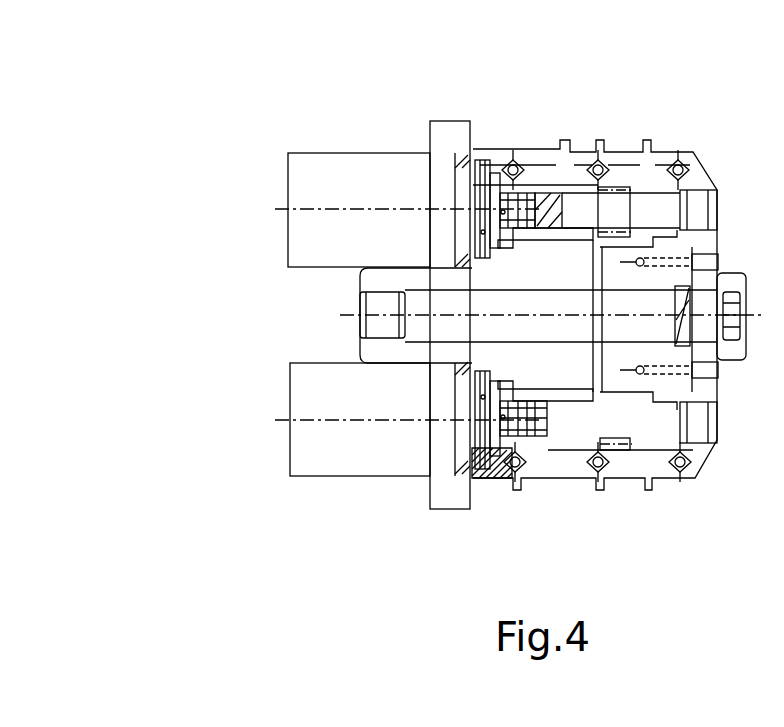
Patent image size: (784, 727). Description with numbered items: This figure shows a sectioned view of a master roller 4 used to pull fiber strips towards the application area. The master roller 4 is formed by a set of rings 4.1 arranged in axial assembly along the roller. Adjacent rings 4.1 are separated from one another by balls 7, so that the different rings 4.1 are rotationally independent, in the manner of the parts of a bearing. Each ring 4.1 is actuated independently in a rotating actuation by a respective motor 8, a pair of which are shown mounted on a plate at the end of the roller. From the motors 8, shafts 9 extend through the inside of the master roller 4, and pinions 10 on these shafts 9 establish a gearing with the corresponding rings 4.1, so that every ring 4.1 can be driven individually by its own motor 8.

The master roller 4 is at (718, 484).
The rings 4.1 is at (628, 165).
The balls 7 is at (680, 470).
The motors 8 is at (348, 395).
The shafts 9 is at (660, 204).
The pinions 10 is at (622, 188).